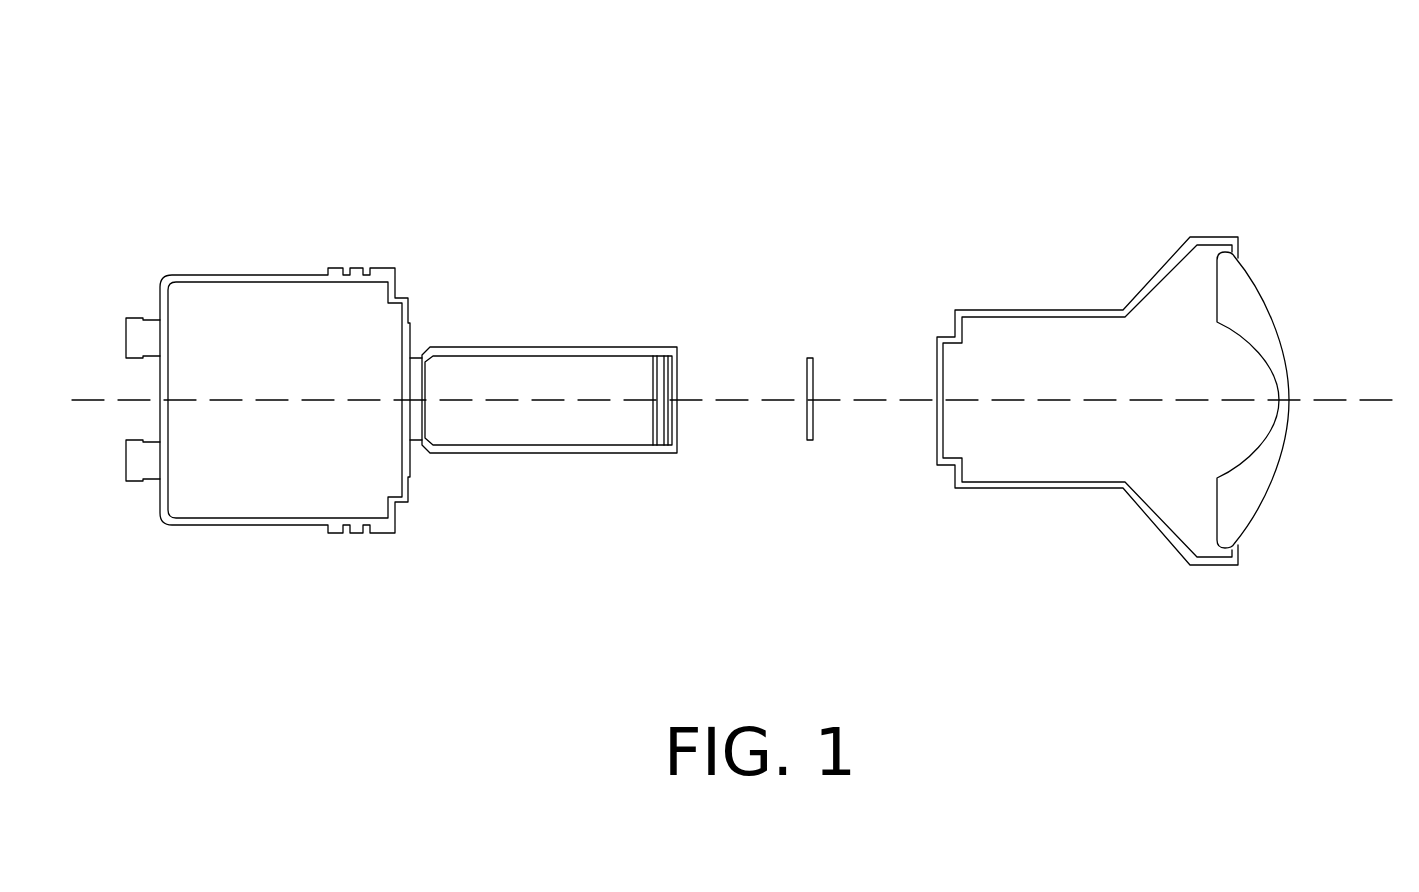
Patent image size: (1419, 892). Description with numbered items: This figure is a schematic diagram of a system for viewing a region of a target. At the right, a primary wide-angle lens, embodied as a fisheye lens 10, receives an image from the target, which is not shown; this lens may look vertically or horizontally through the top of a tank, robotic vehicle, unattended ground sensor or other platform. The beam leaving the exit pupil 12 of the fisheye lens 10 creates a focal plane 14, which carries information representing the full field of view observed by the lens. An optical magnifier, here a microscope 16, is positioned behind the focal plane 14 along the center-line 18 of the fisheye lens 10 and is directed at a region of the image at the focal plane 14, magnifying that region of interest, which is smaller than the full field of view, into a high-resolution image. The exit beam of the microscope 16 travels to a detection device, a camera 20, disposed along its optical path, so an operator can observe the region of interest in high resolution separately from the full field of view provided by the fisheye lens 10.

The fisheye lens 10 is at (1216, 236).
The exit pupil 12 is at (937, 375).
The focal plane 14 is at (815, 358).
The microscope 16 is at (556, 348).
The center-line 18 is at (1375, 400).
The camera 20 is at (243, 274).